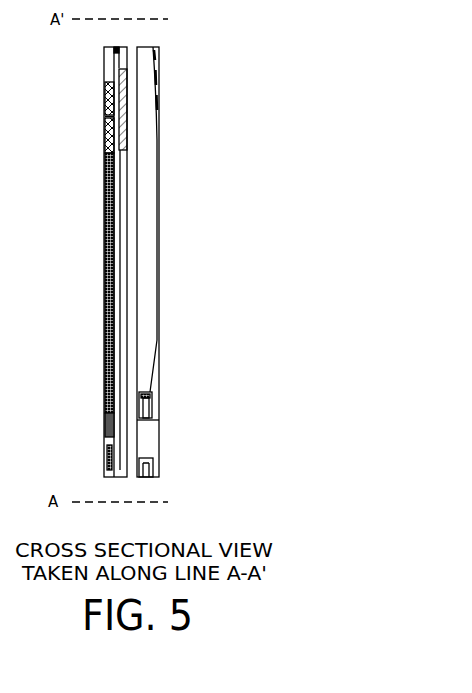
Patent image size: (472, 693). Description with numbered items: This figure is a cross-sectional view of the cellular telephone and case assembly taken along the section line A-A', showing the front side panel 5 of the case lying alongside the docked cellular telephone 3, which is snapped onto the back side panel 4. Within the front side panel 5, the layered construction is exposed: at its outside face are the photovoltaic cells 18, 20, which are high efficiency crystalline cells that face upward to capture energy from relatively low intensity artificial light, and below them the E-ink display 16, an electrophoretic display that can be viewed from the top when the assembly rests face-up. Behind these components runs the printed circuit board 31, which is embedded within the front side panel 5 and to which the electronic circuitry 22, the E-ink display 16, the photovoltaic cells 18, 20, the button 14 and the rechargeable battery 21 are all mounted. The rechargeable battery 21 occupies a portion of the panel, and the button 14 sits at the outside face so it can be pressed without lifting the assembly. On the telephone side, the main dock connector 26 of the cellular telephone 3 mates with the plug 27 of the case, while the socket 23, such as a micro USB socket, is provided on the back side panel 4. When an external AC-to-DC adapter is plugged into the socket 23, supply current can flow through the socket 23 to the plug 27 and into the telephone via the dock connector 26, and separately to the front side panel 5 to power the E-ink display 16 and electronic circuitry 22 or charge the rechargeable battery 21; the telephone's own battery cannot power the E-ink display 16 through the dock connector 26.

The front side panel 5 is at (127, 45).
The cellular telephone 3 is at (151, 287).
The back side panel 4 is at (157, 47).
The photovoltaic cell 18 is at (105, 97).
The photovoltaic cell 20 is at (105, 135).
The rechargeable battery 21 is at (121, 112).
The E-ink display 16 is at (105, 240).
The printed circuit board 31 is at (119, 331).
The button 14 is at (105, 425).
The electronic circuitry 22 is at (108, 459).
The dock connector 26 is at (152, 396).
The plug 27 is at (150, 414).
The socket 23 is at (153, 463).